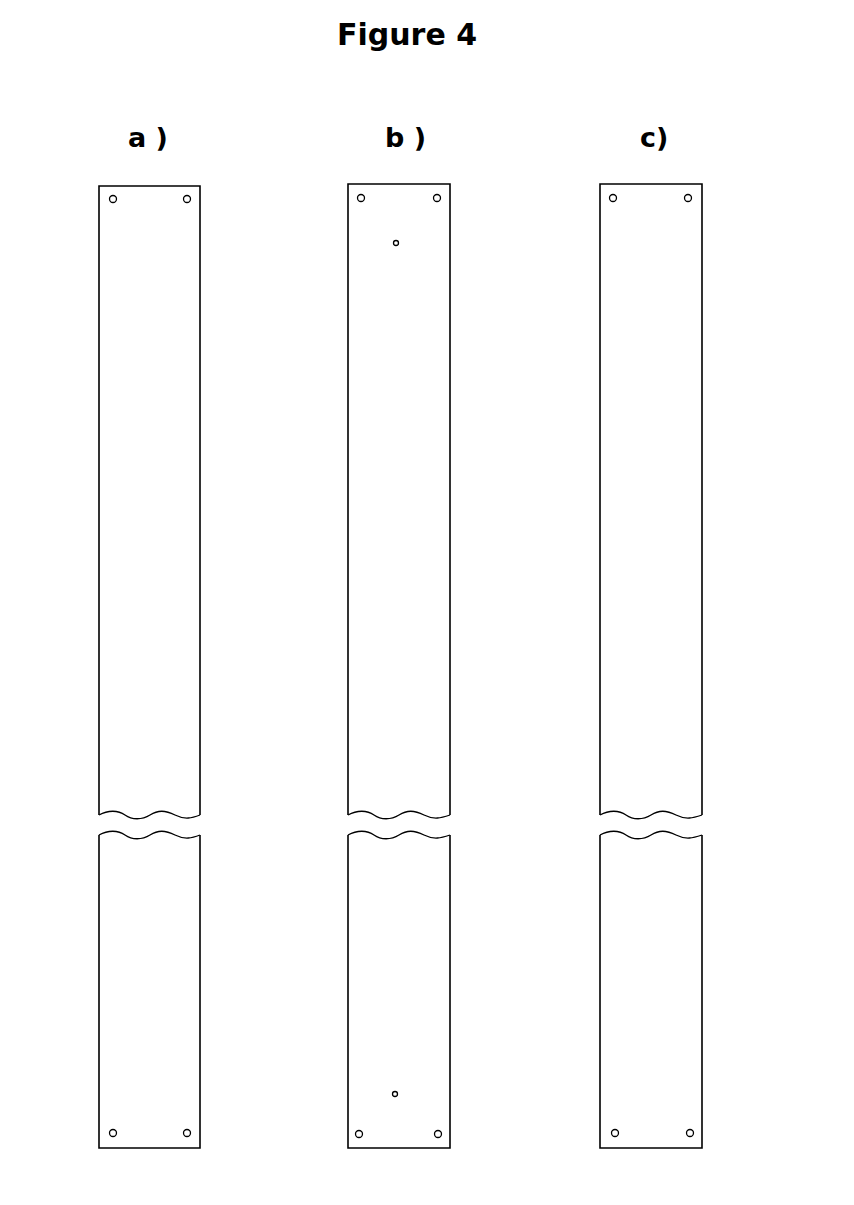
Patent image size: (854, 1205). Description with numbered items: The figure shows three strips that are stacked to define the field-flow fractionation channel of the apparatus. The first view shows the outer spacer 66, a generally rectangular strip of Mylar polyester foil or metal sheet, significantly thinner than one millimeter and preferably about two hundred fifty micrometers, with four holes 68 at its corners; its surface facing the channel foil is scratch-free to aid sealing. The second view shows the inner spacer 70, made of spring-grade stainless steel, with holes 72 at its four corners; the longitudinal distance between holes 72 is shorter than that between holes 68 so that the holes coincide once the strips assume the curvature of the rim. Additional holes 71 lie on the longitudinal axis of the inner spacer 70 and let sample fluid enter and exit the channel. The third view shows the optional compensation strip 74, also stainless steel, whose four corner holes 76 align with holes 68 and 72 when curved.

In FIG. 4a, the outer spacer 66 is at (181, 524).
In FIG. 4a, the holes 68 is at (109, 199).
In FIG. 4b, the inner spacer 70 is at (430, 522).
In FIG. 4b, the holes 71 is at (398, 246).
In FIG. 4b, the holes 72 is at (357, 198).
In FIG. 4c, the compensation strip 74 is at (686, 522).
In FIG. 4c, the holes 76 is at (609, 198).